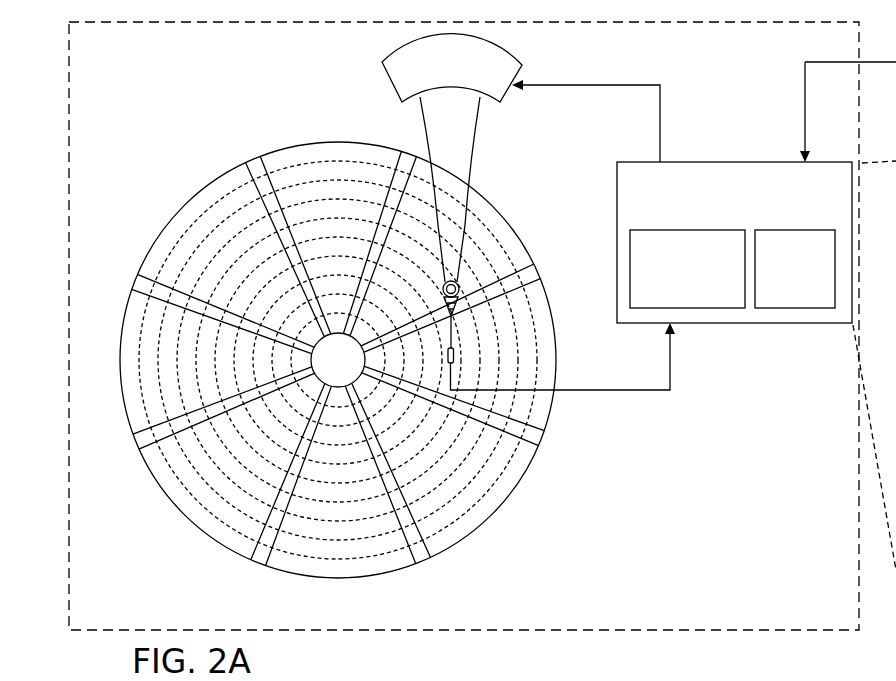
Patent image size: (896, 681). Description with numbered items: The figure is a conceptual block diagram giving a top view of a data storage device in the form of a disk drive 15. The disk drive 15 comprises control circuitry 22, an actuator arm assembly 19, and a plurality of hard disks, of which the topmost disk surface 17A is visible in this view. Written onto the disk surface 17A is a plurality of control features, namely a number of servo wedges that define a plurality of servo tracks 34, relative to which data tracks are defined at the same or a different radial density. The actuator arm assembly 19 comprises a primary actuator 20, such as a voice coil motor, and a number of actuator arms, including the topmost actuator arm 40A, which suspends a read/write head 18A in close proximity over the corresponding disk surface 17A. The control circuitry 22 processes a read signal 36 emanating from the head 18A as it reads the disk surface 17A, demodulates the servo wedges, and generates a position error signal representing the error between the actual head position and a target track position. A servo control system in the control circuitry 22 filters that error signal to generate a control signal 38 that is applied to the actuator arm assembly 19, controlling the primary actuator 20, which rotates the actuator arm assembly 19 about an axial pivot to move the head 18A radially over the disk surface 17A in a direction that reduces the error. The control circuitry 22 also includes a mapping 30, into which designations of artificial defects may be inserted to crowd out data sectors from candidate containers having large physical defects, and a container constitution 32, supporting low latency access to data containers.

The disk drive 15 is at (795, 641).
The topmost disk surface 17A is at (185, 188).
The servo tracks 34 is at (346, 166).
The primary actuator 20 is at (503, 101).
The topmost actuator arm 40A is at (467, 162).
The head 18A is at (468, 369).
The actuator arm assembly 19 is at (505, 127).
The control signal 38 is at (661, 109).
The control circuitry 22 is at (723, 215).
The mapping 30 is at (676, 283).
The container constitution 32 is at (784, 283).
The read signal 36 is at (647, 394).